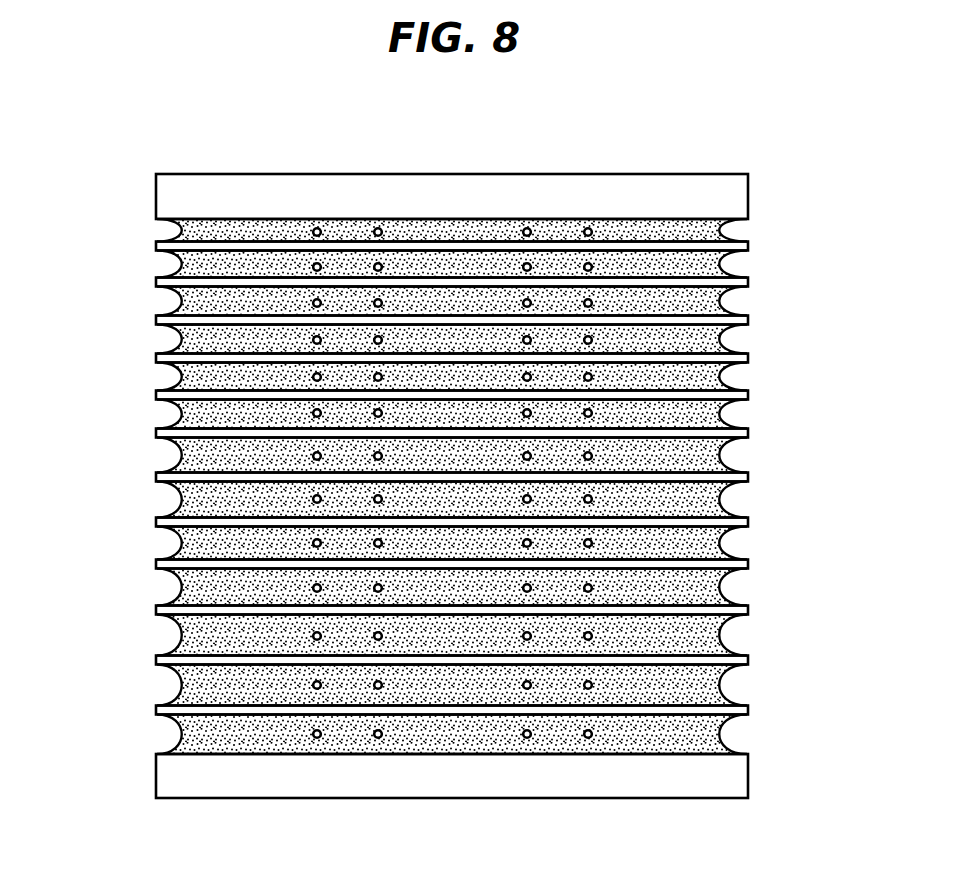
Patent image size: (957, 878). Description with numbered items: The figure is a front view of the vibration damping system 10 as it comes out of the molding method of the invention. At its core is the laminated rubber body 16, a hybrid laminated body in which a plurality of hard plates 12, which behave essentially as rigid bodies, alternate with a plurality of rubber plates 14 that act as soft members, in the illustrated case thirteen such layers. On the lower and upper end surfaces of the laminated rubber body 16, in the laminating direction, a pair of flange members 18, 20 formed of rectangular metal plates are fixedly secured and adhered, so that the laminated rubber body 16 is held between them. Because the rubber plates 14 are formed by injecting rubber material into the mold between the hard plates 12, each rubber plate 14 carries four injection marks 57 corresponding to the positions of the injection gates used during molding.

The vibration damping system 10 is at (603, 160).
The hard plates 12 is at (158, 318).
The rubber plates 14 is at (185, 420).
The laminated rubber body 16 is at (163, 499).
The flange member 18 is at (327, 773).
The flange member 20 is at (363, 175).
The injection marks 57 is at (596, 500).